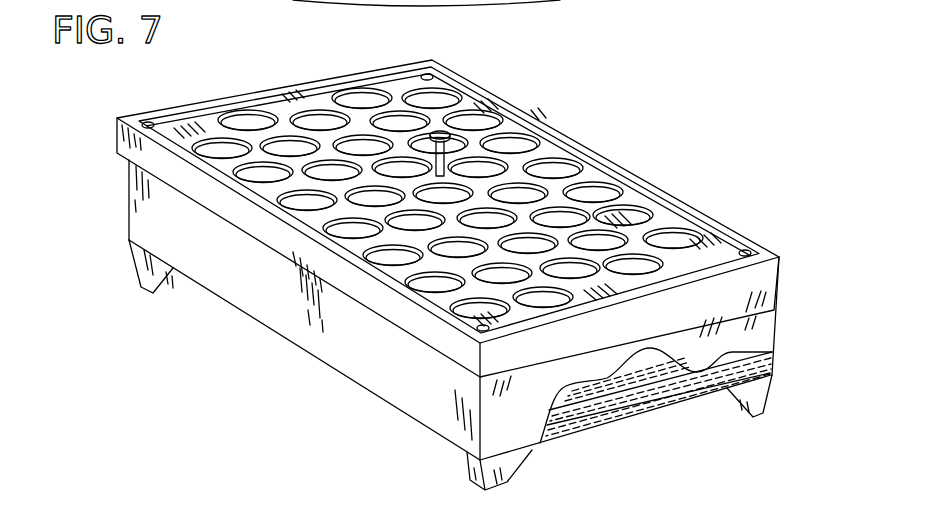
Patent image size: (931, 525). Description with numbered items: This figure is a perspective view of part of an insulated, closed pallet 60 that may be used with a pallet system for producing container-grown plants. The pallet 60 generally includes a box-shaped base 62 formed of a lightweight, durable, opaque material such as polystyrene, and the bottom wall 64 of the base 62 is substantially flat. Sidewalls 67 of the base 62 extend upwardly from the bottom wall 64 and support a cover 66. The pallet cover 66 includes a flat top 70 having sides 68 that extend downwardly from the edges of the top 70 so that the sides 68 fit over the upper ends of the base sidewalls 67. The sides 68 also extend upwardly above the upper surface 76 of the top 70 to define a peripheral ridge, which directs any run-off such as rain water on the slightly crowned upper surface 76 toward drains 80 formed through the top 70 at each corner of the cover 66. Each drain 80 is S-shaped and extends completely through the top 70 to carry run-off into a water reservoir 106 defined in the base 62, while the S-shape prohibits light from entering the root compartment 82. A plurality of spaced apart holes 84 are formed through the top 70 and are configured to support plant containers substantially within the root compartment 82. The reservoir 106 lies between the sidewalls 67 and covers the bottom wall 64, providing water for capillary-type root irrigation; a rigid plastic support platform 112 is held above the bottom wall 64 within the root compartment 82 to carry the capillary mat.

The pallet 60 is at (407, 438).
The base 62 is at (372, 399).
The bottom wall 64 is at (580, 433).
The cover 66 is at (680, 185).
The sidewalls 67 is at (288, 323).
The sides 68 is at (780, 273).
The top 70 is at (472, 102).
The upper surface 76 is at (633, 198).
The drains 80 is at (153, 120).
The root compartment 82 is at (648, 360).
The holes 84 is at (256, 110).
The water reservoir 106 is at (776, 362).
The support platform 112 is at (623, 388).